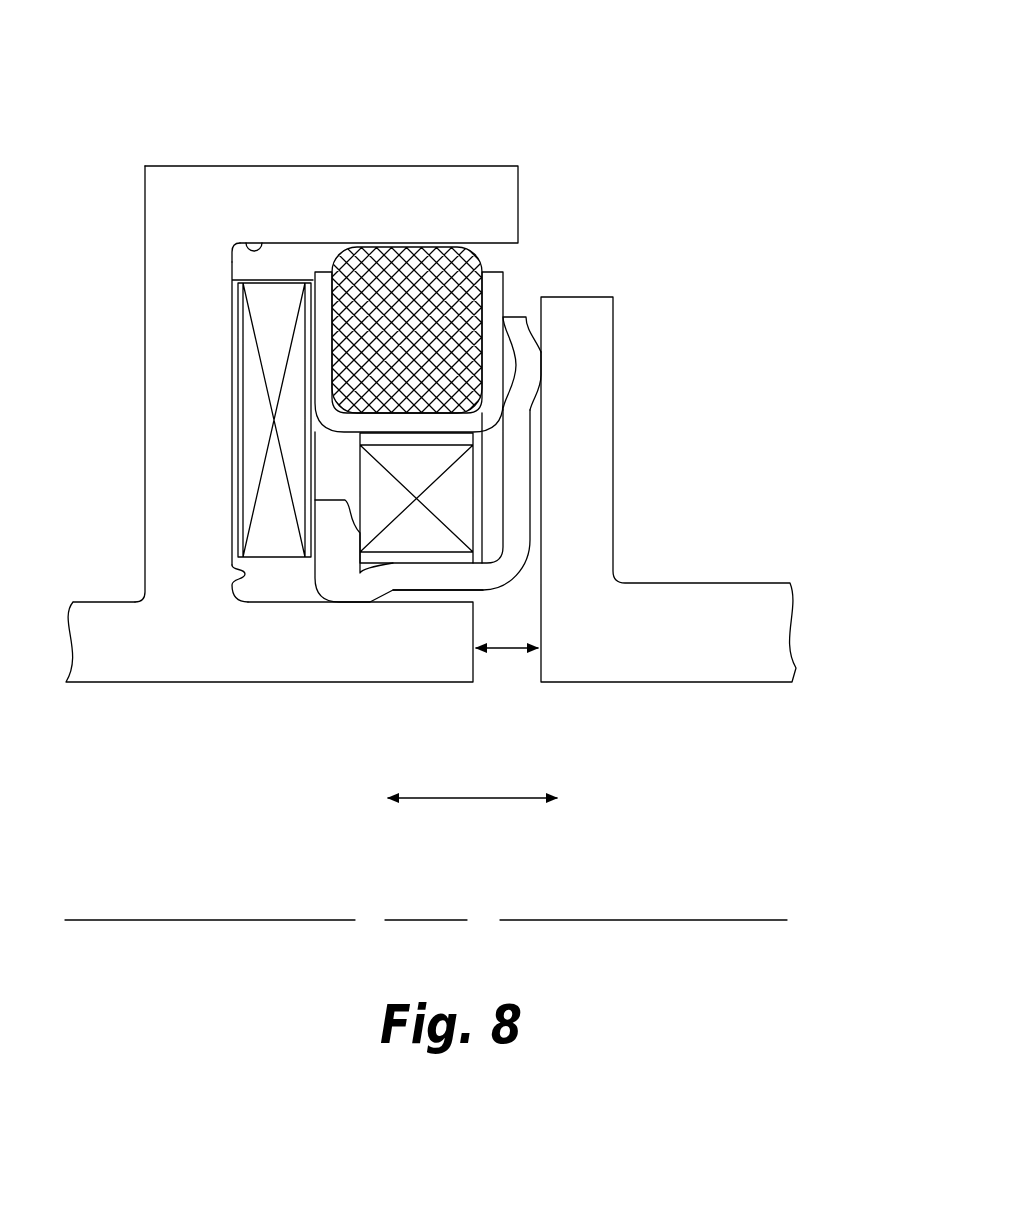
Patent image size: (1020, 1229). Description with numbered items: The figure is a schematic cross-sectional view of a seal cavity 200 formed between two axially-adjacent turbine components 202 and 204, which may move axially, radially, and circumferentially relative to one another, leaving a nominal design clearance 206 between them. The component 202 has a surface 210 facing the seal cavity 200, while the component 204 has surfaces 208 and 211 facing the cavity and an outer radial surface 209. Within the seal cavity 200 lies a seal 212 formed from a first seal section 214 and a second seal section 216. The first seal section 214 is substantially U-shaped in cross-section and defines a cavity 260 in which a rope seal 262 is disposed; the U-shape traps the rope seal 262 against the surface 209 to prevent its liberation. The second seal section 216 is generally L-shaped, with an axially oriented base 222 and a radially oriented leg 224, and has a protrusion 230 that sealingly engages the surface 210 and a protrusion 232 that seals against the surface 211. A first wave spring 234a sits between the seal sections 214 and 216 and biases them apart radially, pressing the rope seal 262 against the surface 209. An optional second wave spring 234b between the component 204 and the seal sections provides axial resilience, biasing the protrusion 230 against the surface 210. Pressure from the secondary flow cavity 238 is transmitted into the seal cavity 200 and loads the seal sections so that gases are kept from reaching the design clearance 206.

The seal cavity 200 is at (642, 64).
The turbine component 202 is at (660, 683).
The turbine component 204 is at (97, 684).
The nominal design clearance 206 is at (507, 656).
The surface 208 is at (237, 588).
The outer radial surface 209 is at (236, 252).
The surface 210 is at (541, 308).
The surface 211 is at (273, 604).
The seal 212 is at (535, 245).
The first seal section 214 is at (308, 272).
The second seal section 216 is at (536, 463).
The base 222 is at (447, 590).
The leg 224 is at (530, 425).
The protrusion 230 is at (541, 358).
The protrusion 232 is at (371, 603).
The first wave spring 234a is at (477, 543).
The second wave spring 234b is at (235, 412).
The secondary flow cavity 238 is at (449, 41).
The cavity 260 is at (332, 262).
The rope seal 262 is at (398, 253).